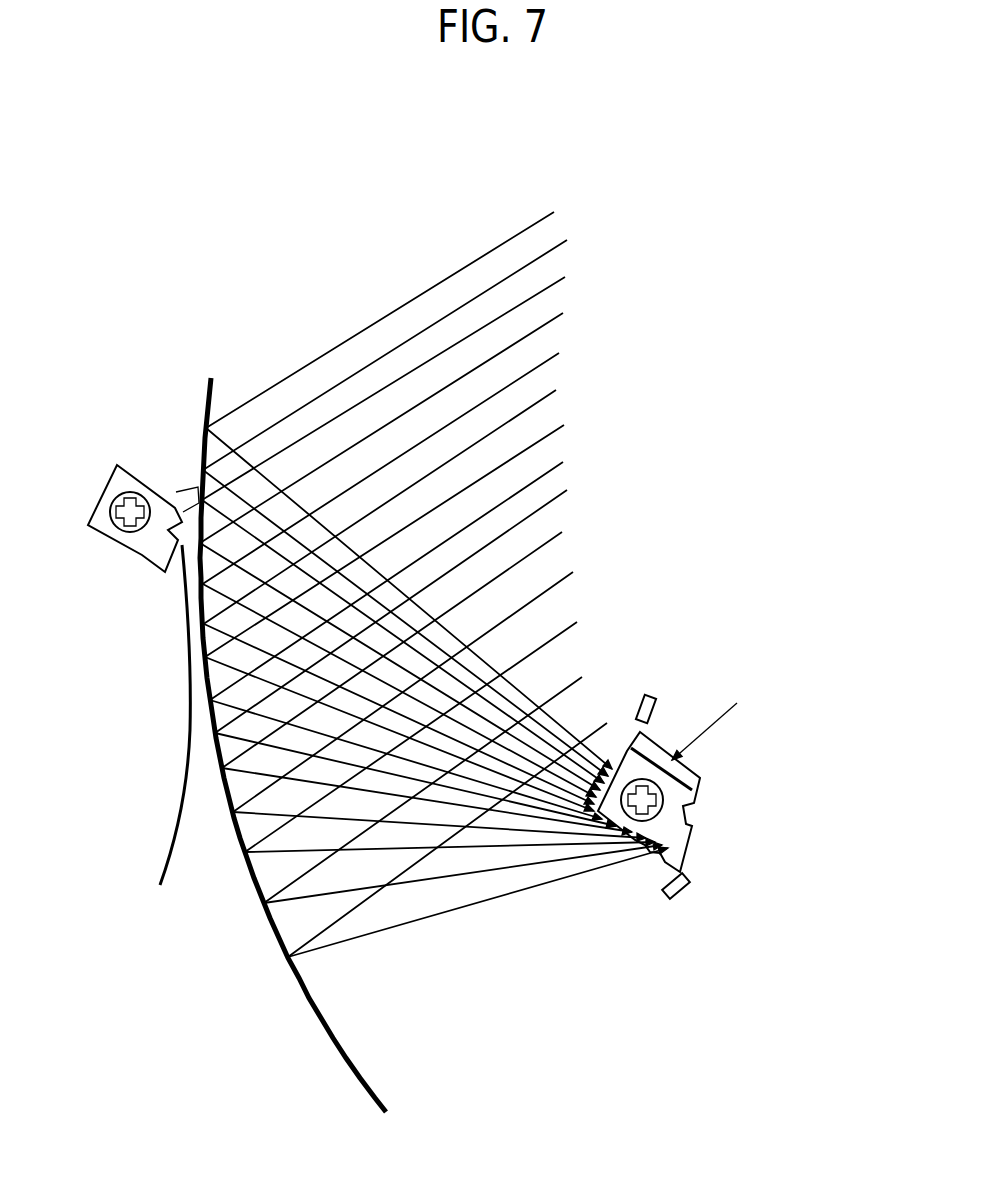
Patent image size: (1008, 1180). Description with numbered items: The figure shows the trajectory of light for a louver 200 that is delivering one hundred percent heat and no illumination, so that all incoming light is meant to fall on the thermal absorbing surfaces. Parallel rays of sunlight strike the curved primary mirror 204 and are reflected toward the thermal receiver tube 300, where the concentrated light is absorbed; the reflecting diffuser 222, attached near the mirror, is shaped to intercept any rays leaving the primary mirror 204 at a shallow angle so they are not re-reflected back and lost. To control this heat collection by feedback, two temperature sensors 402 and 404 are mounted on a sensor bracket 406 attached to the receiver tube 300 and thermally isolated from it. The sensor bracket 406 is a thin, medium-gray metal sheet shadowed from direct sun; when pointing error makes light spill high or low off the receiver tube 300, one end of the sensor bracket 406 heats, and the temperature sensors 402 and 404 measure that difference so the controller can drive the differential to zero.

The louver 200 is at (224, 358).
The primary mirror 204 is at (335, 1040).
The reflecting diffuser 222 is at (188, 750).
The thermal receiver tube 300 is at (112, 542).
The temperature sensor 402 is at (655, 693).
The temperature sensor 404 is at (690, 897).
The sensor bracket 406 is at (695, 812).